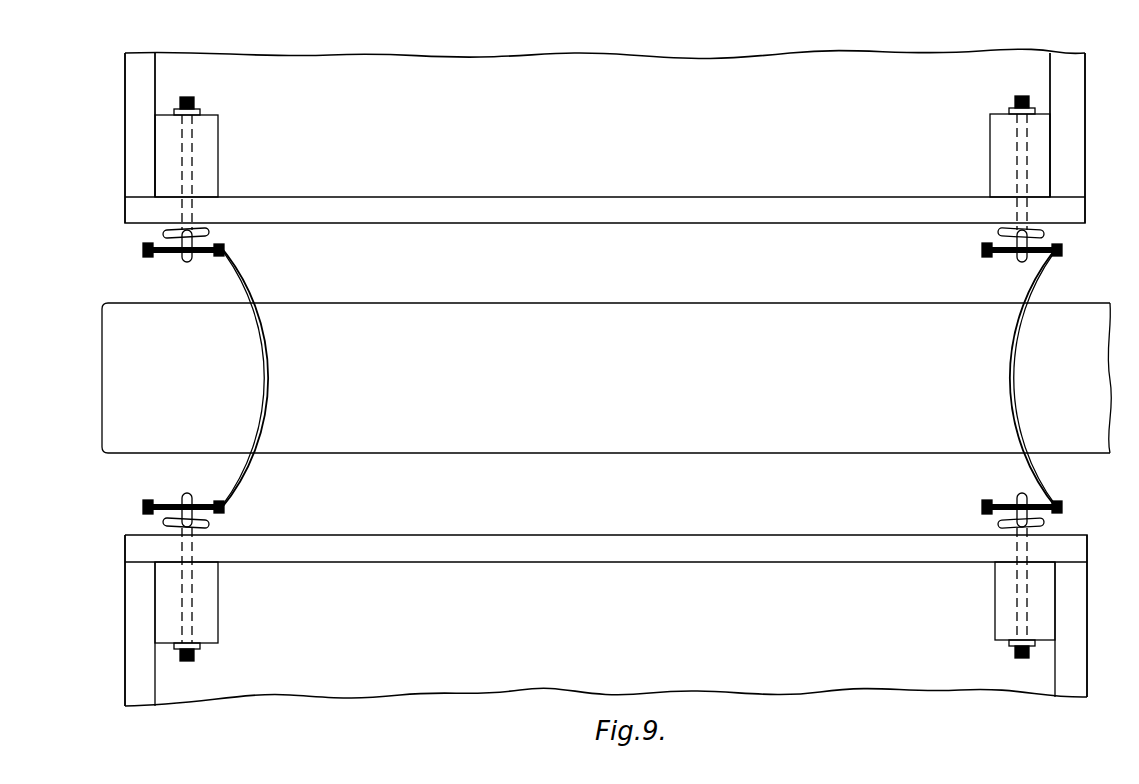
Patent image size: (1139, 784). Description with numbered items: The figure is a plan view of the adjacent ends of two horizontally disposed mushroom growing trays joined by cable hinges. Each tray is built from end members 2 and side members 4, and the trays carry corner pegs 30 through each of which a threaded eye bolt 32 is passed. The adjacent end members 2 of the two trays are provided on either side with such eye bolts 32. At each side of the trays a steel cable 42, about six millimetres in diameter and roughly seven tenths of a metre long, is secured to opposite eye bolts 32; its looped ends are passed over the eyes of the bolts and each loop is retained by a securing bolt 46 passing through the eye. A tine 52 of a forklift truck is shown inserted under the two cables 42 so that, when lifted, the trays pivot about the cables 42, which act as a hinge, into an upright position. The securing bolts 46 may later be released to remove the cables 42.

The end member 2 is at (268, 214).
The side member 4 is at (142, 182).
The corner peg 30 is at (208, 153).
The threaded eye bolt 32 is at (200, 100).
The steel cable 42 is at (263, 370).
The securing bolt 46 is at (206, 243).
The tine 52 is at (606, 378).